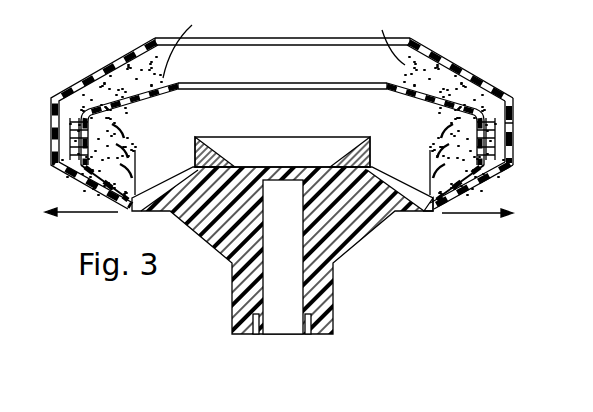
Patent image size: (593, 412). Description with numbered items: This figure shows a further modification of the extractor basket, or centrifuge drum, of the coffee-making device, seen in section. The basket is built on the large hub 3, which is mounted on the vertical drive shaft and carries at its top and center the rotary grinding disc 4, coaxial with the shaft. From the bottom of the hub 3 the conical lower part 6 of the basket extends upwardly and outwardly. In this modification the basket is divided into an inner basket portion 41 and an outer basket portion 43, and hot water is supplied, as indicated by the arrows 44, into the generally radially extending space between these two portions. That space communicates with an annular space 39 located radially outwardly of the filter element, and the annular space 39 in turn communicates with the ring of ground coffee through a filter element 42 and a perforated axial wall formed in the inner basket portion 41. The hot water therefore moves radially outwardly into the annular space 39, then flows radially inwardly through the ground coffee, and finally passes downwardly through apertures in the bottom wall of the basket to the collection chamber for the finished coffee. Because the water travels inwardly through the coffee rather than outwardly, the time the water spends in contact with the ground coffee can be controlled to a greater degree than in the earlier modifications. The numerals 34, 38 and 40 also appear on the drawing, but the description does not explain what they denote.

The hub 3 is at (360, 222).
The rotary grinding disc 4 is at (365, 158).
The conical lower part 6 is at (509, 168).
The bore slots 34 is at (306, 336).
The flange edge 38 is at (431, 213).
The annular space 39 is at (512, 118).
The perforated tube 40 is at (500, 147).
The inner basket portion 41 is at (164, 92).
The filter element 42 is at (474, 170).
The outer basket portion 43 is at (468, 76).
The arrows 44 is at (401, 63).